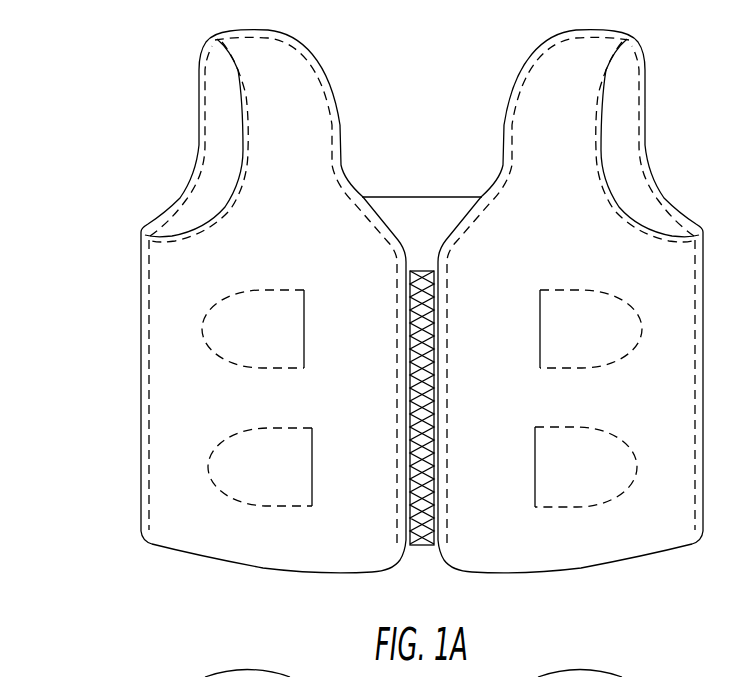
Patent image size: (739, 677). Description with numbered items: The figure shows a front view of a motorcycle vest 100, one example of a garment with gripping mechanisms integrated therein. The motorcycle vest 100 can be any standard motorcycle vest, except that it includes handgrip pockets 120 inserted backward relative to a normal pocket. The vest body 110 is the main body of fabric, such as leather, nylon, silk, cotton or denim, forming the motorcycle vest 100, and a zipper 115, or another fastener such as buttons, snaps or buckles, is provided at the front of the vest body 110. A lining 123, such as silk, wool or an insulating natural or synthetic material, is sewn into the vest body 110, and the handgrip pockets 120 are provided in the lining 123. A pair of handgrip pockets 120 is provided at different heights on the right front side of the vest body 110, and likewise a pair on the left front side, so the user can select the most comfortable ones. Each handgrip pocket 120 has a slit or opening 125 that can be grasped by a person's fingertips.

The motorcycle vest 100 is at (74, 100).
The vest body 110 is at (140, 300).
The zipper 115 is at (420, 548).
The handgrip pockets 120 is at (258, 292).
The lining 123 is at (510, 92).
The slit or opening 125 is at (305, 326).